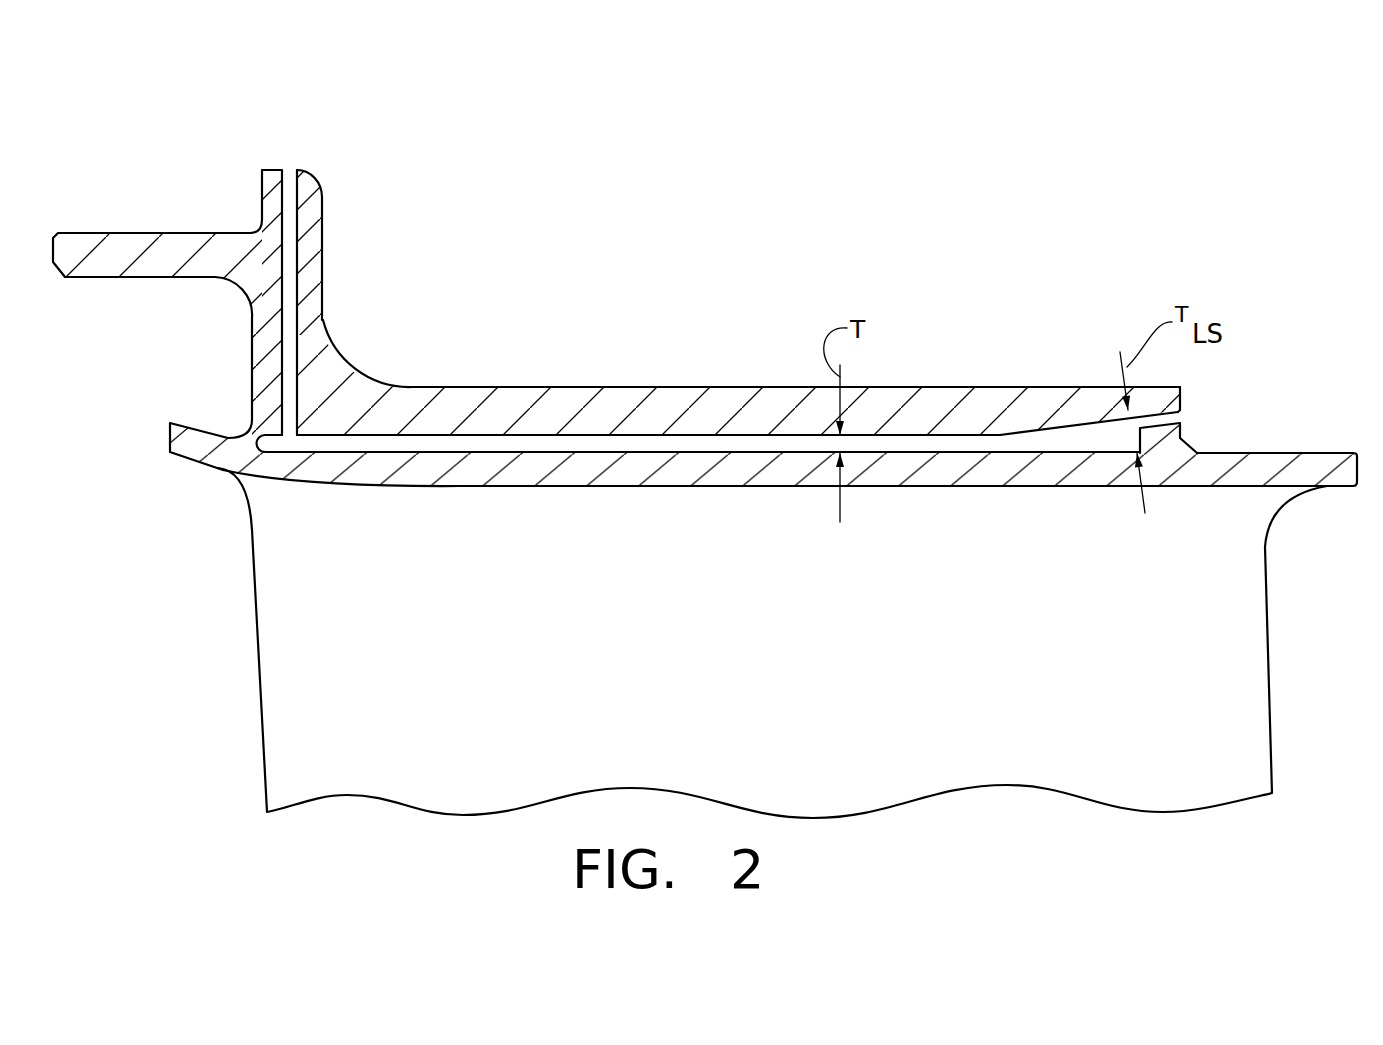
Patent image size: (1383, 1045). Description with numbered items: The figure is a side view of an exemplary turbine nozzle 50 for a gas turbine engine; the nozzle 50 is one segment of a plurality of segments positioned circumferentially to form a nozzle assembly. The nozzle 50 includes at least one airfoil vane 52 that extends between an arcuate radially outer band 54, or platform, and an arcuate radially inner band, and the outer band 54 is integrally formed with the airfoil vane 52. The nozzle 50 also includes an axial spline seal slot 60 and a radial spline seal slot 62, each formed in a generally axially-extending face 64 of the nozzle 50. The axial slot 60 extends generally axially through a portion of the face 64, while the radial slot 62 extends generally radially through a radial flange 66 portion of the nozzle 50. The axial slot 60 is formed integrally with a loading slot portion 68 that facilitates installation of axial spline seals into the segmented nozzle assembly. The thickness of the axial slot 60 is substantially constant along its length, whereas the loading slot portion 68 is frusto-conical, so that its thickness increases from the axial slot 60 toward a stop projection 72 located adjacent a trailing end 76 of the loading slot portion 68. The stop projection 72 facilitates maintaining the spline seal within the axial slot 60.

The turbine nozzle 50 is at (146, 98).
The airfoil vane 52 is at (735, 654).
The radially outer band 54 is at (1293, 453).
The axial spline seal slot 60 is at (423, 435).
The radial spline seal slot 62 is at (290, 267).
The axially-extending face 64 is at (673, 400).
The radial flange 66 is at (308, 220).
The loading slot portion 68 is at (1057, 431).
The stop projection 72 is at (1183, 433).
The trailing end 76 is at (1198, 410).